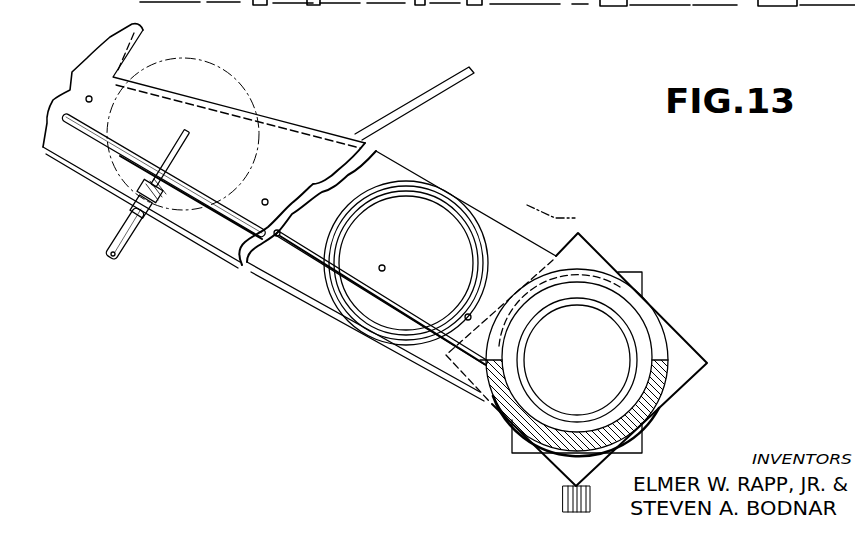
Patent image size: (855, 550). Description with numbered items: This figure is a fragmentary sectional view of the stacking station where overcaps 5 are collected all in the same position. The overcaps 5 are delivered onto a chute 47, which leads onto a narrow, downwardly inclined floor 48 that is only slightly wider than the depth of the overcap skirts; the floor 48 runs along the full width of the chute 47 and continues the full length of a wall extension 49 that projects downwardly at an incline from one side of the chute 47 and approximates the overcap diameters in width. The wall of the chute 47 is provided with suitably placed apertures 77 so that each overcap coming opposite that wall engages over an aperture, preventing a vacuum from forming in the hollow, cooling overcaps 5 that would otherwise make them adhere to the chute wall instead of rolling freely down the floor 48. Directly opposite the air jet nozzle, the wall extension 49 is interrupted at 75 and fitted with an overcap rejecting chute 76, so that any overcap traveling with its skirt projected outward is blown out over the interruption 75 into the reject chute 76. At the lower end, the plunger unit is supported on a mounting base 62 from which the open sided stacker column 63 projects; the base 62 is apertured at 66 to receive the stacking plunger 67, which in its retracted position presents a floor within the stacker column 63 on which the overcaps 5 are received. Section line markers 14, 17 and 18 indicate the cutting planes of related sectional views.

The overcaps 5 is at (262, 151).
The chute 47 is at (113, 42).
The floor 48 is at (101, 182).
The wall extension 49 is at (505, 233).
The mounting base 62 is at (706, 362).
The stacker column 63 is at (668, 380).
The aperture 66 is at (518, 372).
The stacking plunger 67 is at (617, 333).
The interruption 75 is at (233, 106).
The overcap rejecting chute 76 is at (300, 124).
The apertures 77 is at (466, 313).
The section line 14- 14 is at (579, 232).
The section line 17- 17 is at (438, 155).
The section line 18- 18 is at (200, 133).